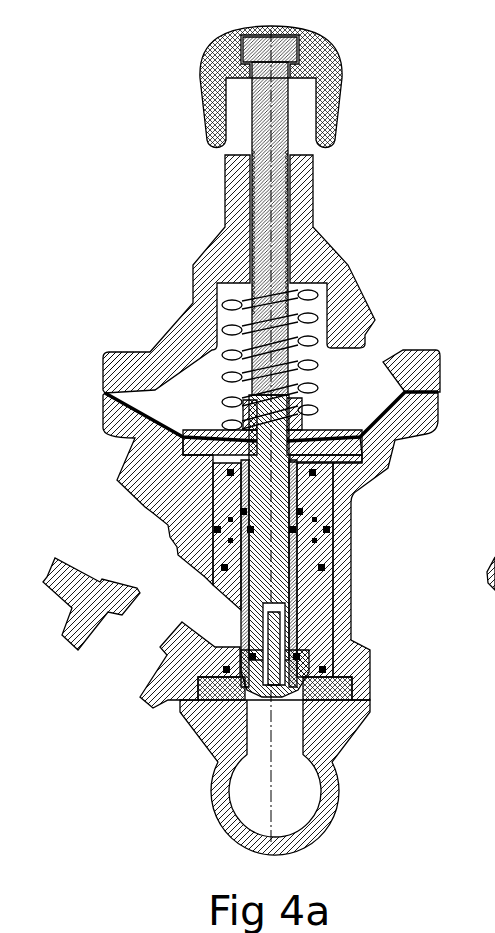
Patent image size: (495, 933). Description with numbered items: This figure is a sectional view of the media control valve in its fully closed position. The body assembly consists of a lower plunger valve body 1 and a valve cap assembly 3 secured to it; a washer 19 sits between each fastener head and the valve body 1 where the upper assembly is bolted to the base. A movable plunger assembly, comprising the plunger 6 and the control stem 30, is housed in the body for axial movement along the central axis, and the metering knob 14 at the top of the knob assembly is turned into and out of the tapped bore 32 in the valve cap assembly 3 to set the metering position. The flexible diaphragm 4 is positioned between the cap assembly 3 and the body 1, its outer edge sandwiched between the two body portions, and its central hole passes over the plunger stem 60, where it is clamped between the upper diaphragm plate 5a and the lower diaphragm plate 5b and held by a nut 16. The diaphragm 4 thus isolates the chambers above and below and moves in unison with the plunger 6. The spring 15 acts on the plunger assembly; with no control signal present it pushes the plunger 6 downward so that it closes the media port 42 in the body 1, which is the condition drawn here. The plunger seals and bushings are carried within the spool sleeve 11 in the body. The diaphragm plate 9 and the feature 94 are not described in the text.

The valve body 1 is at (425, 410).
The valve cap assembly 3 is at (343, 317).
The diaphragm 4 is at (160, 388).
The upper diaphragm plate 5a is at (408, 425).
The lower diaphragm plate 5b is at (347, 447).
The plunger 6 is at (289, 578).
The diaphragm plate 9 is at (202, 430).
The spool sleeve 11 is at (305, 667).
The metering knob 14 is at (330, 70).
The spring 15 is at (315, 288).
The nut 16 is at (243, 405).
The washer 19 is at (362, 673).
The control stem 30 is at (283, 50).
The tapped bore 32 is at (278, 123).
The media port 42 is at (148, 570).
The plunger stem 60 is at (285, 402).
The outlet passage 94 is at (293, 800).